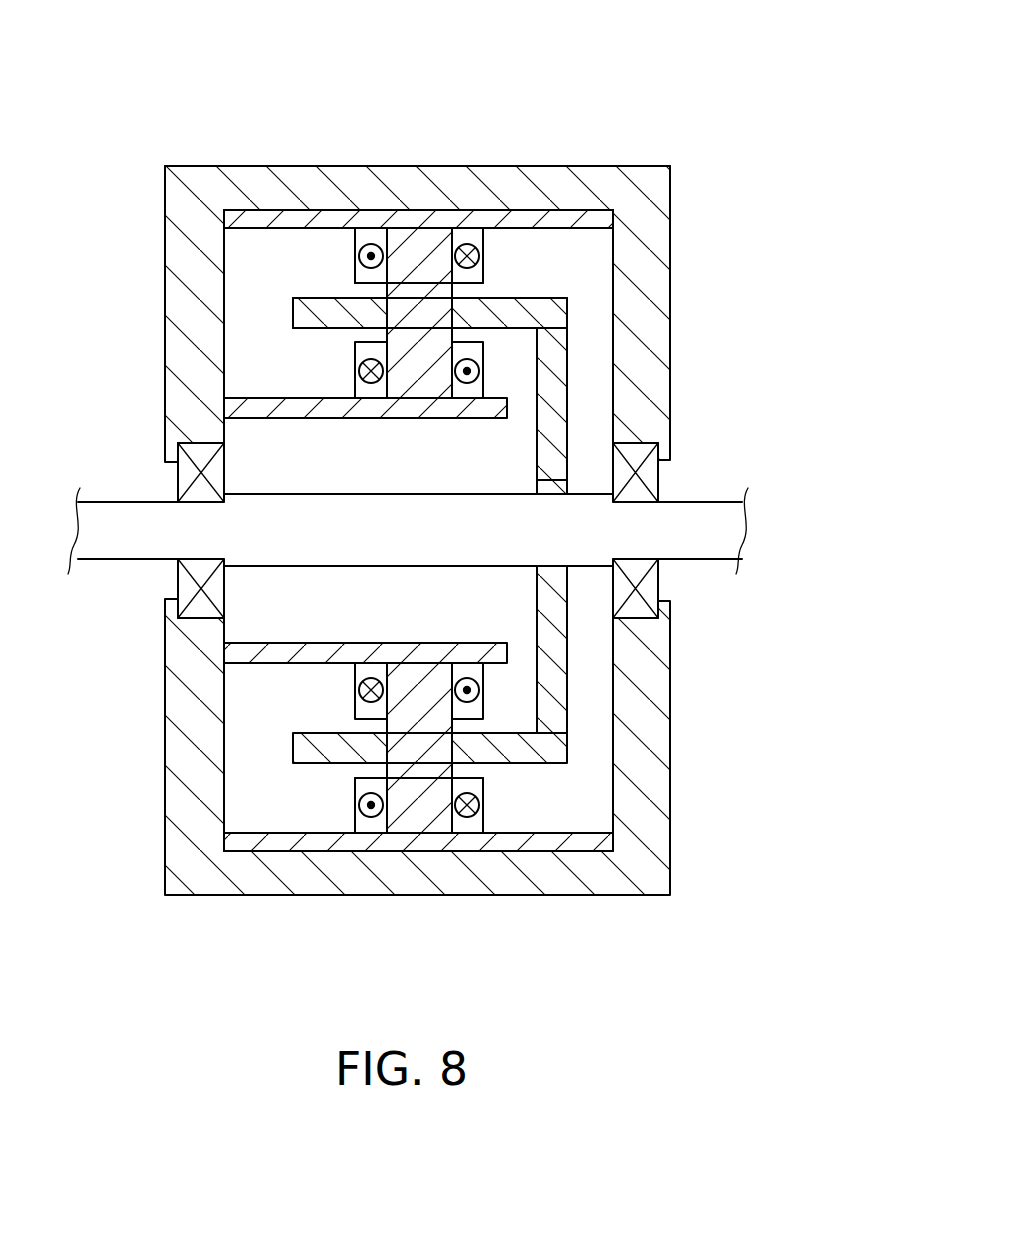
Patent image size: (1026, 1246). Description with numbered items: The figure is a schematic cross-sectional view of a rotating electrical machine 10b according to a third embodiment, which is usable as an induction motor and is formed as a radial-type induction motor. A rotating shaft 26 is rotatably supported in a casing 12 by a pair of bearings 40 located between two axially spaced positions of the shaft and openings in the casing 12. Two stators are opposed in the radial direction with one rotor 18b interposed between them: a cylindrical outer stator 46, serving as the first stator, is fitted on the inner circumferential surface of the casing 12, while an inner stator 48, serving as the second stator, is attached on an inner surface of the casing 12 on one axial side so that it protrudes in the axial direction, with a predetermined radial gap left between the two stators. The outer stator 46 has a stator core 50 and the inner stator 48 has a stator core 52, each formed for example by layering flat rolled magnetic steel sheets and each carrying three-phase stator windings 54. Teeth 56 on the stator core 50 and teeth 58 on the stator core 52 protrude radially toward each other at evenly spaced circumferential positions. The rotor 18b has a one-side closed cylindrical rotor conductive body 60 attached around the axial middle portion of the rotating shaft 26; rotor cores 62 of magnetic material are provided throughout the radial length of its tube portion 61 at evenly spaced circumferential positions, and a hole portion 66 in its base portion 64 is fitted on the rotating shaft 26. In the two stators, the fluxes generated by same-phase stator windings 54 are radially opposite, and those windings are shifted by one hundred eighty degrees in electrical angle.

The rotating electrical machine 10b is at (662, 128).
The casing 12 is at (423, 180).
The rotor 18b is at (555, 402).
The rotating shaft 26 is at (693, 512).
The bearings 40 is at (185, 574).
The outer stator 46 is at (264, 220).
The inner stator 48 is at (498, 402).
The stator core 50 is at (527, 217).
The stator core 52 is at (287, 410).
The stator windings 54 is at (475, 274).
The teeth 56 is at (433, 250).
The teeth 58 is at (417, 370).
The rotor conductive body 60 is at (555, 628).
The tube portion 61 is at (318, 325).
The rotor cores 62 is at (420, 313).
The base portion 64 is at (543, 461).
The hole portion 66 is at (552, 490).